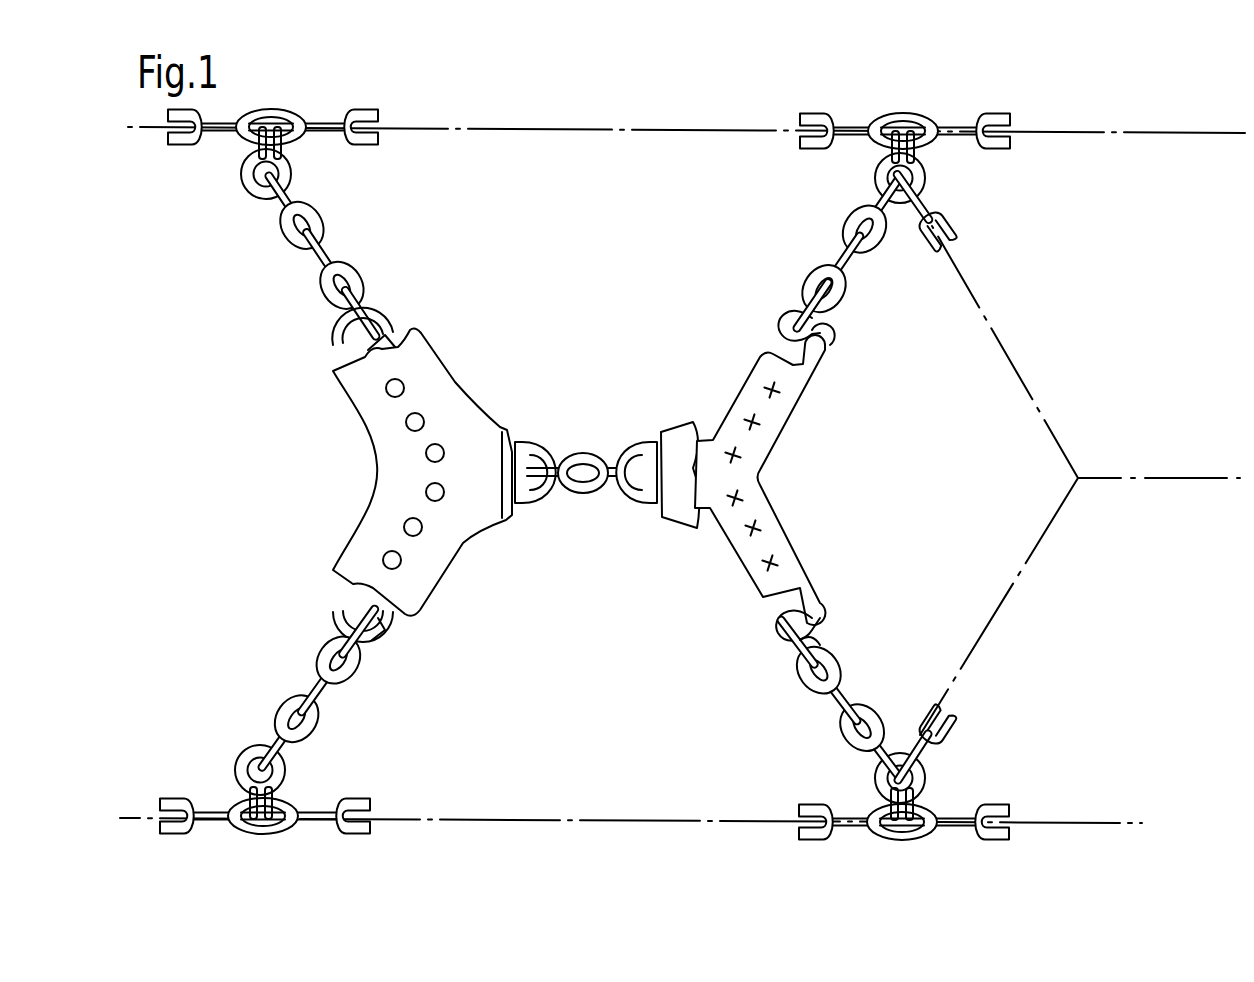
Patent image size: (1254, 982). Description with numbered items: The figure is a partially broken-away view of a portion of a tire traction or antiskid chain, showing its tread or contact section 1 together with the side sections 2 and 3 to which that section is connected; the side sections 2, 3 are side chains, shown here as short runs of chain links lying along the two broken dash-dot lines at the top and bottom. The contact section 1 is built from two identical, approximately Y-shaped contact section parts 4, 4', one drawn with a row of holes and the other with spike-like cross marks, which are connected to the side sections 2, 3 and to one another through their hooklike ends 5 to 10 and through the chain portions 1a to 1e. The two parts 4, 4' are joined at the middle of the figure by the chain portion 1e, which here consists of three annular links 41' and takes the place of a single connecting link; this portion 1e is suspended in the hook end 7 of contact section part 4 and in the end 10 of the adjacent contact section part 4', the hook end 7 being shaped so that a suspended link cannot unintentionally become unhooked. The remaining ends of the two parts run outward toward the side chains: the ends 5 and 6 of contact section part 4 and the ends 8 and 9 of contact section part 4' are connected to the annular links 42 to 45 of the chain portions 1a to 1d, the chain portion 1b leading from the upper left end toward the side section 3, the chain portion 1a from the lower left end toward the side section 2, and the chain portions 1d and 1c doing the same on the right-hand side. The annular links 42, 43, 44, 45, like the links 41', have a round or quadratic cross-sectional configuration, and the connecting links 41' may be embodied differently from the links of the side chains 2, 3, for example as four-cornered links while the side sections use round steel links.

The tread or contact section 1 is at (985, 258).
The chain portion 1a is at (304, 725).
The chain portion 1b is at (318, 218).
The chain portion 1c is at (846, 682).
The chain portion 1d is at (941, 211).
The chain portion 1e is at (592, 455).
The side section 2 is at (366, 842).
The side section 3 is at (369, 112).
The contact section part 4 is at (458, 352).
The contact section part 4' is at (760, 480).
The hooklike end 5 is at (377, 645).
The hooklike end 6 is at (385, 330).
The hooklike end 7 is at (540, 462).
The hooklike end 8 is at (1023, 217).
The hooklike end 9 is at (785, 640).
The hooklike end 10 is at (634, 505).
The annular link 41' is at (554, 660).
The annular link 42 is at (341, 680).
The annular link 43 is at (357, 303).
The annular link 44 is at (814, 652).
The annular link 45 is at (806, 310).